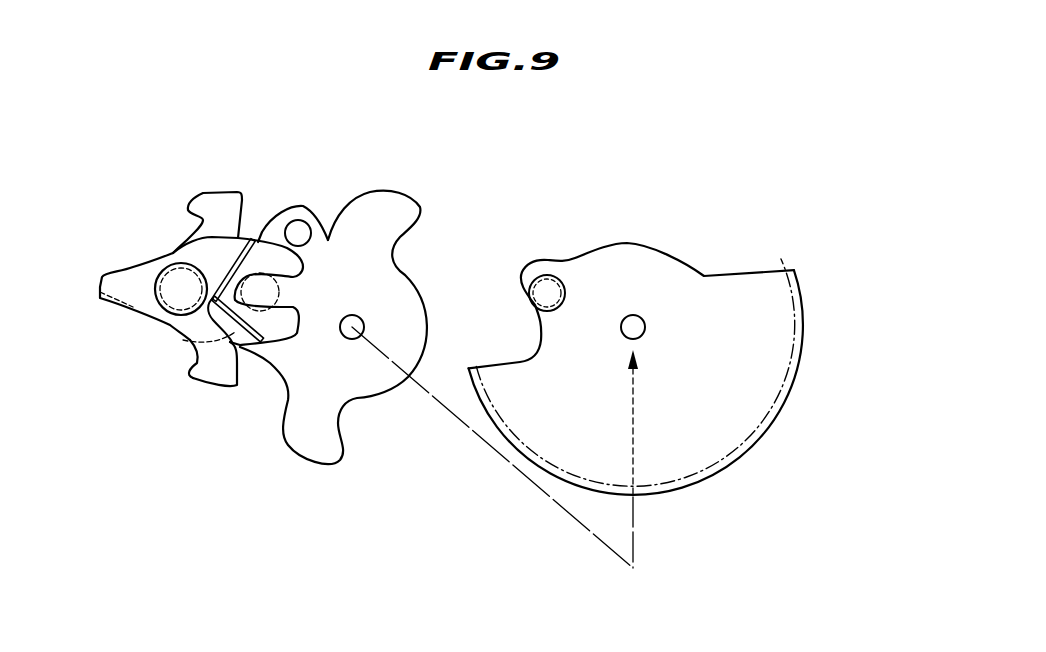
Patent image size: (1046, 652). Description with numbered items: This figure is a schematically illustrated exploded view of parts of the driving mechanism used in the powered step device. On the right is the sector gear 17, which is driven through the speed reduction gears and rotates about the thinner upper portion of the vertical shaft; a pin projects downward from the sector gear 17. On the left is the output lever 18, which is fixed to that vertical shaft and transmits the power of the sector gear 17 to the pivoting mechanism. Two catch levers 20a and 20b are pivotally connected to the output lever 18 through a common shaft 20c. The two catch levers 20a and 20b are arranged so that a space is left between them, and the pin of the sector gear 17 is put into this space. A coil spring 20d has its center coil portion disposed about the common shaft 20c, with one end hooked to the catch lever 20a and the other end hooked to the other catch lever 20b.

The sector gear 17 is at (768, 325).
The output lever 18 is at (290, 421).
The catch lever 20a is at (210, 373).
The catch lever 20b is at (217, 200).
The common shaft 20c is at (150, 272).
The coil spring 20d is at (185, 337).